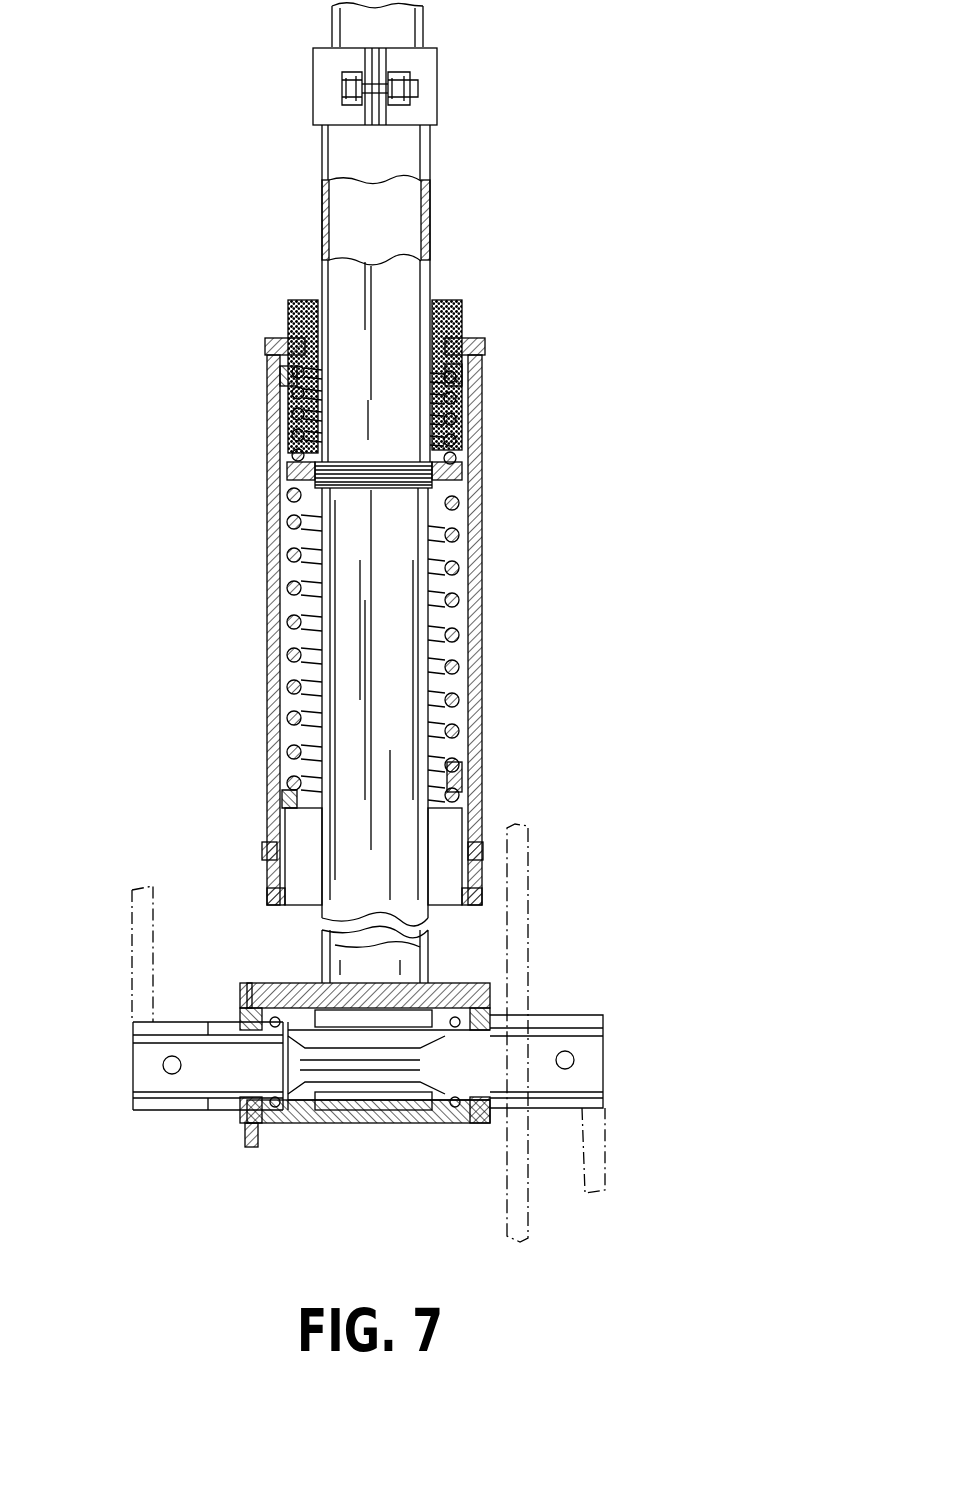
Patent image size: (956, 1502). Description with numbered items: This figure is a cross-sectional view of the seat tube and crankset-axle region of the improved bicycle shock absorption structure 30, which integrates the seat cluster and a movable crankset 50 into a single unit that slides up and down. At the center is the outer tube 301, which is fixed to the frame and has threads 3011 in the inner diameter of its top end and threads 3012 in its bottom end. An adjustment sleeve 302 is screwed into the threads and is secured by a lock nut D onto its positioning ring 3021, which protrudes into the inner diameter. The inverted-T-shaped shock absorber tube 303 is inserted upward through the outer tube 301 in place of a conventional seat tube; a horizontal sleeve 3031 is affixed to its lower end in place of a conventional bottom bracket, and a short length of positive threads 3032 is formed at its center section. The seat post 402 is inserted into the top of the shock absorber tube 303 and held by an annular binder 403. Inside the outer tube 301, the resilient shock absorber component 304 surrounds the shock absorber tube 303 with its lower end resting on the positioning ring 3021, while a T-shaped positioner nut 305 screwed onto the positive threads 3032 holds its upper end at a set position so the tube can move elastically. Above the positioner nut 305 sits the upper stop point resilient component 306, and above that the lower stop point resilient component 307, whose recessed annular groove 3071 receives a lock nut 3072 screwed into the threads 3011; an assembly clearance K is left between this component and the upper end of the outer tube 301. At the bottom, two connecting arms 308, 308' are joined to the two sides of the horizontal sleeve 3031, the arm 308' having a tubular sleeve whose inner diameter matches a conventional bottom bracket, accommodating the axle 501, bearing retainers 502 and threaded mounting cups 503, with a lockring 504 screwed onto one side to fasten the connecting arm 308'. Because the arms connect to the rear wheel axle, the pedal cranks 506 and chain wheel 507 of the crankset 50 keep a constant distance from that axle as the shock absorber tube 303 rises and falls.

The shock absorption structure 30 is at (207, 366).
The crankset 50 is at (637, 1098).
The outer tube 301 is at (268, 612).
The threads 3011 is at (270, 378).
The threads 3012 is at (284, 792).
The adjustment sleeve 302 is at (480, 828).
The positioning ring 3021 is at (480, 785).
The shock absorber tube 303 is at (393, 688).
The horizontal sleeve 3031 is at (455, 988).
The positive threads 3032 is at (463, 443).
The resilient shock absorber component 304 is at (455, 603).
The positioner nut 305 is at (463, 474).
The upper stop point resilient component 306 is at (455, 417).
The lower stop point resilient component 307 is at (431, 323).
The recessed annular groove 3071 is at (464, 320).
The lock nut 3072 is at (486, 340).
The connecting arm 308 is at (231, 924).
The connecting arm 308' is at (451, 1038).
The seat post 402 is at (423, 30).
The annular binder 403 is at (430, 92).
The axle 501 is at (580, 1055).
The bearing retainers 502 is at (495, 1012).
The threaded mounting cups 503 is at (245, 1125).
The lockring 504 is at (243, 990).
The pedal cranks 506 is at (135, 905).
The chain wheel 507 is at (517, 1172).
The assembly clearance K is at (310, 296).
The lock nut D is at (263, 845).